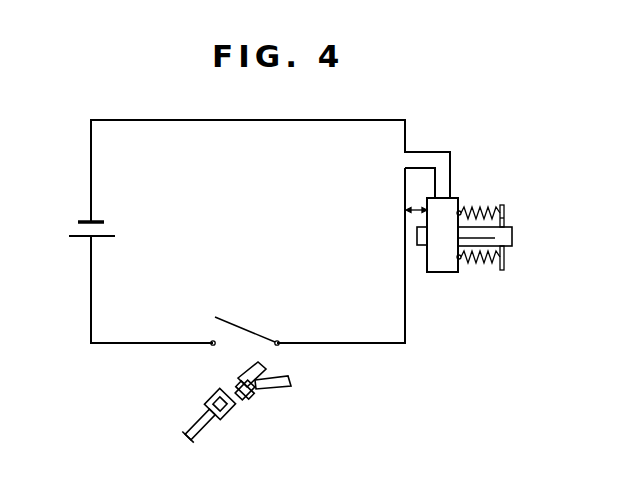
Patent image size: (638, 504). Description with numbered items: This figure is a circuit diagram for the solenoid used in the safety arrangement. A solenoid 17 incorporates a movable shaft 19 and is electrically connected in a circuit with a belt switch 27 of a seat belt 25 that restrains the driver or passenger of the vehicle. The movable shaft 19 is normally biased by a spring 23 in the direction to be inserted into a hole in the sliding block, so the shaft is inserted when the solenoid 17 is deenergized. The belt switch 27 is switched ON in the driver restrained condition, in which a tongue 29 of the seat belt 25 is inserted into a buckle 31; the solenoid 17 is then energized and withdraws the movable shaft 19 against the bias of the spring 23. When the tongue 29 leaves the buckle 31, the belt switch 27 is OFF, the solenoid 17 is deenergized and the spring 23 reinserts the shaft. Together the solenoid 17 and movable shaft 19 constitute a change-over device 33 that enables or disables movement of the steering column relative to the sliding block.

The solenoid 17 is at (440, 274).
The movable shaft 19 is at (493, 238).
The spring 23 is at (478, 264).
The seat belt 25 is at (277, 380).
The belt switch 27 is at (250, 334).
The tongue 29 is at (240, 396).
The buckle 31 is at (227, 412).
The change-over device 33 is at (458, 192).